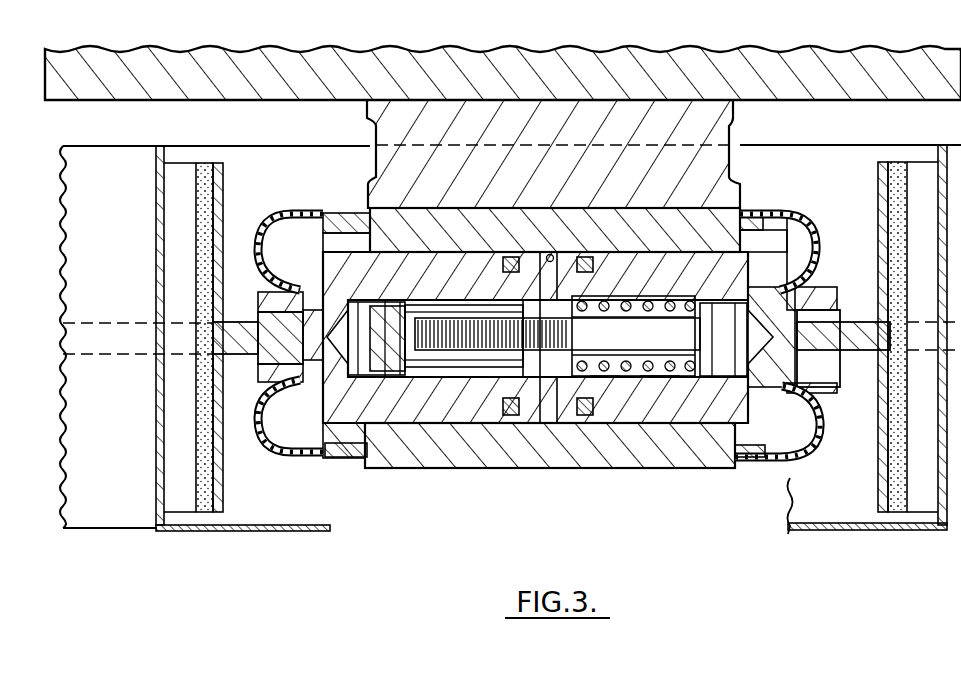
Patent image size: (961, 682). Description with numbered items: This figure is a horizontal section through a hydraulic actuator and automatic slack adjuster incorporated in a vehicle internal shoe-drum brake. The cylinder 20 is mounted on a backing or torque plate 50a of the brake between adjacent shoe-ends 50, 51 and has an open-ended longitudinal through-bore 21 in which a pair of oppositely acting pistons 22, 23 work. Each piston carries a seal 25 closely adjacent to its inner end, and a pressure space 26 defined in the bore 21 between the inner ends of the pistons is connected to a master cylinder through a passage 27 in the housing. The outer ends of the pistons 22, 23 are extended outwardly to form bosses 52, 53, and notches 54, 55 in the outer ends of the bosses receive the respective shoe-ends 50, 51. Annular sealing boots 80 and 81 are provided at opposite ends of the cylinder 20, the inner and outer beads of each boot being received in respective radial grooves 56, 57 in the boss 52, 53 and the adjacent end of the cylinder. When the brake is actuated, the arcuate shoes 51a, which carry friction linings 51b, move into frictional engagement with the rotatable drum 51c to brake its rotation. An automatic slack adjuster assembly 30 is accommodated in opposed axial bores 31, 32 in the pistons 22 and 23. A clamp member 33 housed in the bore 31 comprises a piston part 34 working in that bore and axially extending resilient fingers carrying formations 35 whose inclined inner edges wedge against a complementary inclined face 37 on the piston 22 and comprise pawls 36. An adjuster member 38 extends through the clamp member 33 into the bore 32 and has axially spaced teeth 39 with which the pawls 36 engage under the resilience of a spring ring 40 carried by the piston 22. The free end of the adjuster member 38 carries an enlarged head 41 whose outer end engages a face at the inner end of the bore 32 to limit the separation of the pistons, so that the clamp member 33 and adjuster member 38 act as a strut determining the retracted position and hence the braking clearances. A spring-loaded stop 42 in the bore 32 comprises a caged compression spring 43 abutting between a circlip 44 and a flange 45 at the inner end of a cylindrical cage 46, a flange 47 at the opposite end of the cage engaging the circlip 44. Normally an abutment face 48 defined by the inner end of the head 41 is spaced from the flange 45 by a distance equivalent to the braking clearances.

The backing or torque plate 50a is at (335, 95).
The rotatable drum 51c is at (156, 210).
The friction linings 51b is at (205, 165).
The arcuate shoes 51a is at (223, 192).
The spring-loaded stop 42 is at (733, 195).
The cylinder 20 is at (592, 440).
The through-bore 21 is at (466, 470).
The piston 23 is at (702, 468).
The enlarged head 41 is at (800, 385).
The radial groove 56 is at (275, 294).
The shoe-end 50 is at (252, 336).
The notch 54 is at (285, 368).
The notch 55 is at (830, 350).
The shoe-end 51 is at (850, 336).
The boss 52 is at (272, 420).
The annular sealing boot 80 is at (290, 455).
The flange 45 is at (778, 250).
The boss 53 is at (818, 420).
The annular sealing boot 81 is at (800, 462).
The radial groove 57 is at (320, 470).
The teeth 39 is at (433, 318).
The spring ring 40 is at (480, 320).
The formations 35 is at (512, 300).
The passage 27 is at (553, 253).
The pawls 36 is at (522, 262).
The flange 47 is at (576, 300).
The cylindrical cage 46 is at (640, 300).
The adjuster member 38 is at (662, 330).
The piston part 34 is at (376, 445).
The piston 22 is at (396, 470).
The axial bore 31 is at (412, 465).
The clamp member 33 is at (432, 440).
The inclined face 37 is at (479, 440).
The seal 25 is at (501, 470).
The pressure space 26 is at (521, 440).
The circlip 44 is at (602, 470).
The automatic slack adjuster assembly 30 is at (600, 400).
The axial bore 32 is at (642, 470).
The caged compression spring 43 is at (655, 400).
The abutment face 48 is at (712, 440).